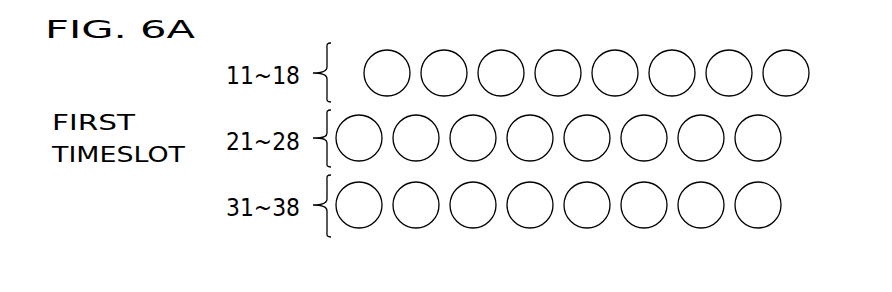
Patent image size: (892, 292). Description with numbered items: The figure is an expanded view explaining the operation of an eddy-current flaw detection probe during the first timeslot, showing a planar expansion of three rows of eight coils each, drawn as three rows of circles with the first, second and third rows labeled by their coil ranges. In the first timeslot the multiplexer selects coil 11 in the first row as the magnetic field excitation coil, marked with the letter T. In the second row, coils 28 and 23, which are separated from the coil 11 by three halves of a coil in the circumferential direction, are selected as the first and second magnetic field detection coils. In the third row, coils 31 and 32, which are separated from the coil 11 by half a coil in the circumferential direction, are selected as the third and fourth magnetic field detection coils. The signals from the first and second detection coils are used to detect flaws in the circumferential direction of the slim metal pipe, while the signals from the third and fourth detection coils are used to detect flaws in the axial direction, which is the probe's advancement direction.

The coil 11 is at (442, 55).
The coil 28 is at (356, 115).
The coil 23 is at (528, 115).
The coil 31 is at (414, 226).
The coil 32 is at (477, 226).